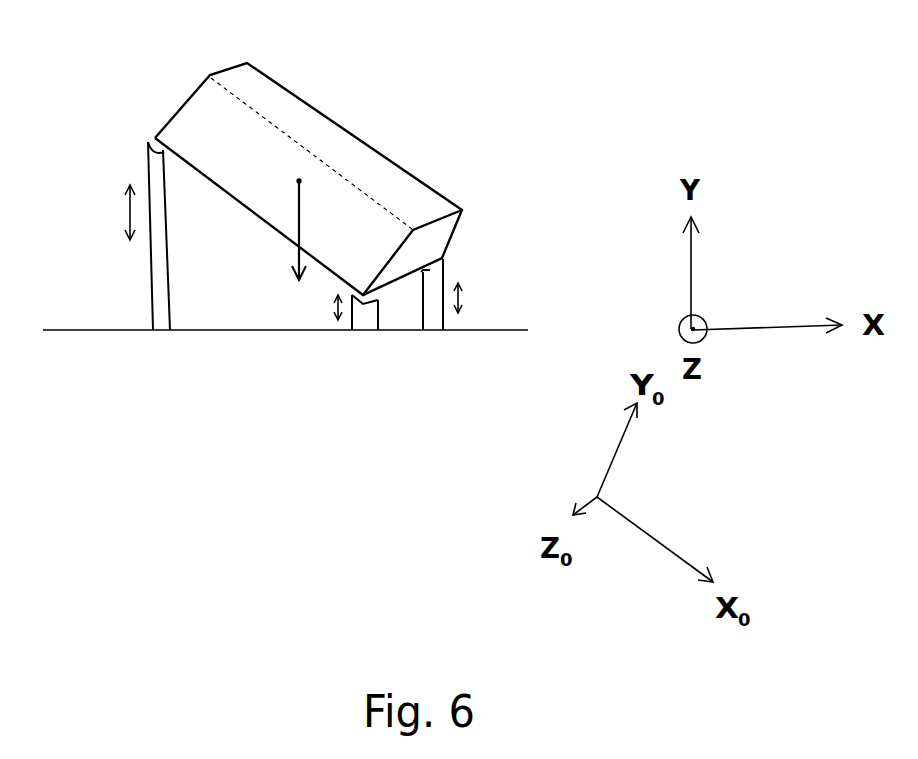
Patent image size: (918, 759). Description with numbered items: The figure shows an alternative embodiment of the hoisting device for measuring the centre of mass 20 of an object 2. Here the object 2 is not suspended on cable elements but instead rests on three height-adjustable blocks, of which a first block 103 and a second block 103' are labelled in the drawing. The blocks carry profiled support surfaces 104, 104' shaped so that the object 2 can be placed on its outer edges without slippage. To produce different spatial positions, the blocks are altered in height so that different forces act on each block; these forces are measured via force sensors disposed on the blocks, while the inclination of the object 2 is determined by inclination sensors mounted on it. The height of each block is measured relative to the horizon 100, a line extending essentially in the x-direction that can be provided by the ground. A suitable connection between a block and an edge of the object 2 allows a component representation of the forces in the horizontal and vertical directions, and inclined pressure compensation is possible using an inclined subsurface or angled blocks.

The object 2 is at (331, 129).
The center of mass 20 is at (293, 178).
The horizon 100 is at (113, 333).
The height-adjustable block 103 is at (97, 236).
The height-adjustable block 103' is at (321, 347).
The support surface 104 is at (135, 100).
The support surface 104' is at (395, 333).